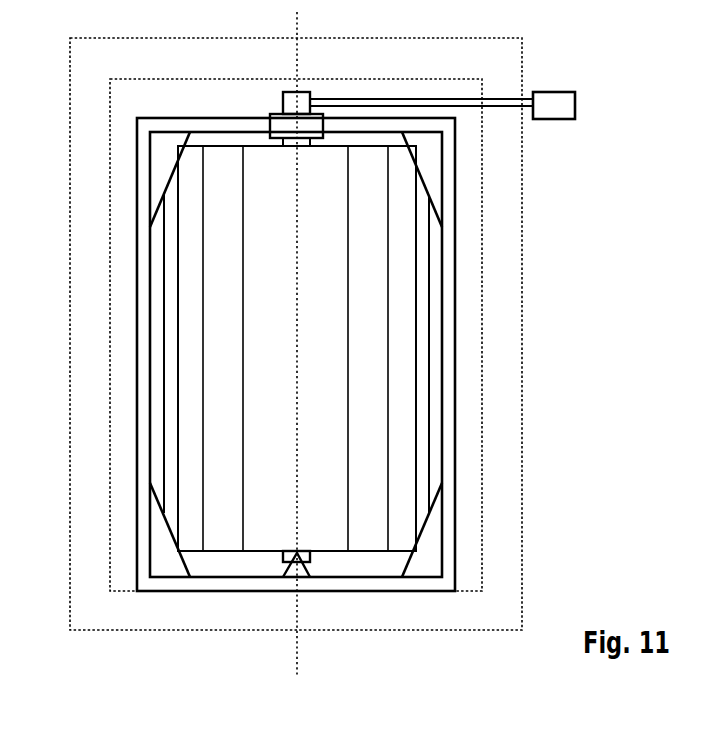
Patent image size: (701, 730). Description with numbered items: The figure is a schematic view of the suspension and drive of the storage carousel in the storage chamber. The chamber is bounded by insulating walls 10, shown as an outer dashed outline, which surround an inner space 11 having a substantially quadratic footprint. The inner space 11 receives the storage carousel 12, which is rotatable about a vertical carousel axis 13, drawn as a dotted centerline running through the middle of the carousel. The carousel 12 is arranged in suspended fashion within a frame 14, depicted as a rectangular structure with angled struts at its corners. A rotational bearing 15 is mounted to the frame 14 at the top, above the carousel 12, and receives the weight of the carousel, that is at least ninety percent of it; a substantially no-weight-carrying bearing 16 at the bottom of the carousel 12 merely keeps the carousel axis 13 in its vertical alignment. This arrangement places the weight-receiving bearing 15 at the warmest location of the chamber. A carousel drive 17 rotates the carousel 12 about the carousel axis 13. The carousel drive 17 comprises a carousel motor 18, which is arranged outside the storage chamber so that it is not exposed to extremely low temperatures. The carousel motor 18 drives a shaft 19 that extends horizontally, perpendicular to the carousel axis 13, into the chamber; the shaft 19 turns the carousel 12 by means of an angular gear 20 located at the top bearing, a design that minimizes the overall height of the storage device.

The insulating walls 10 is at (267, 334).
The inner space 11 is at (251, 335).
The storage carousel 12 is at (368, 348).
The carousel axis 13 is at (253, 355).
The frame 14 is at (234, 354).
The rotational bearing 15 is at (259, 77).
The no-weight-carrying bearing 16 is at (334, 614).
The carousel drive 17 is at (473, 90).
The carousel motor 18 is at (572, 131).
The shaft 19 is at (421, 58).
The angular gear 20 is at (325, 62).